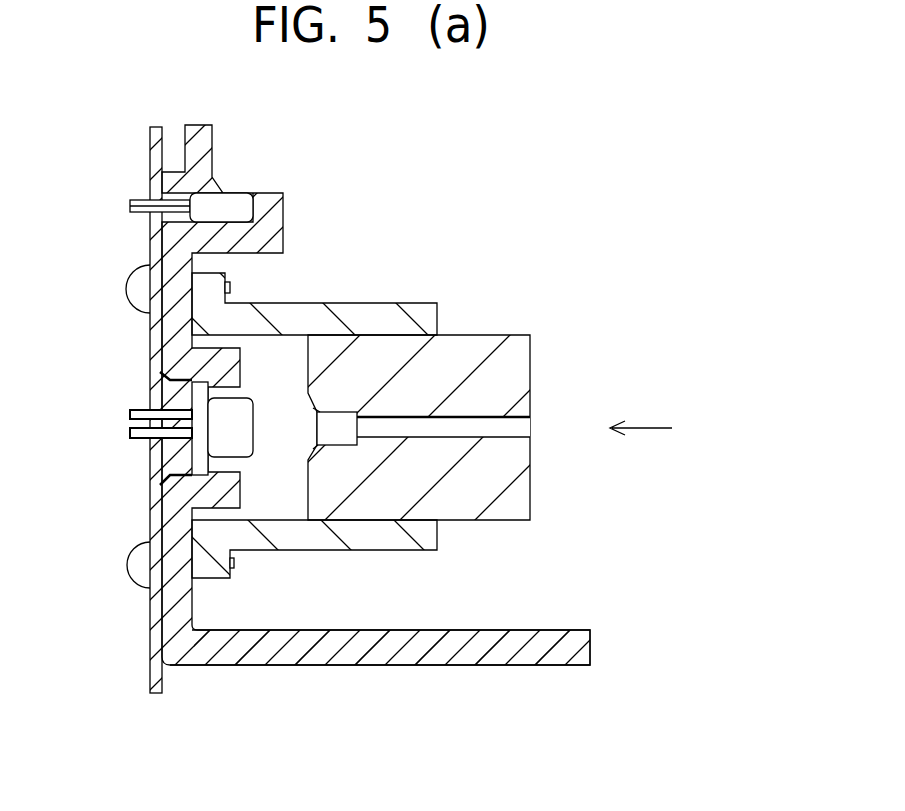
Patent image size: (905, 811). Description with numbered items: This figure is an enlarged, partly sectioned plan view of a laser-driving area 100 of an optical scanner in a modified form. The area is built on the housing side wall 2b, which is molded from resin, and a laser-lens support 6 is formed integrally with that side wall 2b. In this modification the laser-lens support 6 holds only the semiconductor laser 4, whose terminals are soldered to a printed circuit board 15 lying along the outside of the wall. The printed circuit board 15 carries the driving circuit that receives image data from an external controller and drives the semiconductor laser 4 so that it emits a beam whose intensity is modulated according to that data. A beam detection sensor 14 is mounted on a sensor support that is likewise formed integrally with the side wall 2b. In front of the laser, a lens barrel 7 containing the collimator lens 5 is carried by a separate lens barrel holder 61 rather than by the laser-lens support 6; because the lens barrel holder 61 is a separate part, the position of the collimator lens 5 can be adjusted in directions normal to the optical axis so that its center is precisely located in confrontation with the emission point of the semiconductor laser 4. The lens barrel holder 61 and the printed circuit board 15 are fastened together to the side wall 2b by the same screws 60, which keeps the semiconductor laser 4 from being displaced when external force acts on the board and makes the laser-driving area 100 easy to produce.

The laser-driving area 100 is at (577, 279).
The beam detection sensor 14 is at (233, 205).
The screw 60 is at (125, 290).
The semiconductor laser 4 is at (200, 395).
The laser-lens support 6 is at (220, 490).
The collimator lens 5 is at (336, 430).
The lens barrel holder 61 is at (397, 537).
The lens barrel 7 is at (500, 480).
The printed circuit board 15 is at (155, 638).
The side wall 2b is at (260, 650).